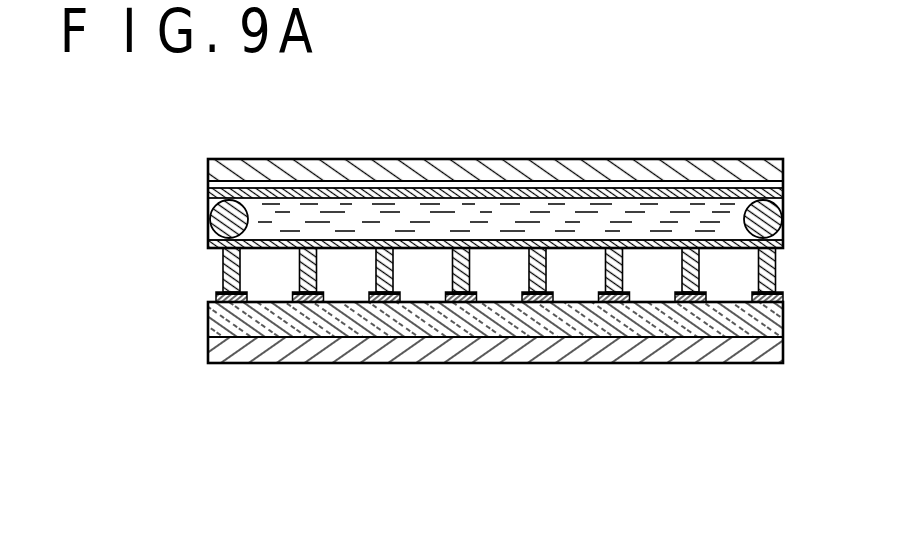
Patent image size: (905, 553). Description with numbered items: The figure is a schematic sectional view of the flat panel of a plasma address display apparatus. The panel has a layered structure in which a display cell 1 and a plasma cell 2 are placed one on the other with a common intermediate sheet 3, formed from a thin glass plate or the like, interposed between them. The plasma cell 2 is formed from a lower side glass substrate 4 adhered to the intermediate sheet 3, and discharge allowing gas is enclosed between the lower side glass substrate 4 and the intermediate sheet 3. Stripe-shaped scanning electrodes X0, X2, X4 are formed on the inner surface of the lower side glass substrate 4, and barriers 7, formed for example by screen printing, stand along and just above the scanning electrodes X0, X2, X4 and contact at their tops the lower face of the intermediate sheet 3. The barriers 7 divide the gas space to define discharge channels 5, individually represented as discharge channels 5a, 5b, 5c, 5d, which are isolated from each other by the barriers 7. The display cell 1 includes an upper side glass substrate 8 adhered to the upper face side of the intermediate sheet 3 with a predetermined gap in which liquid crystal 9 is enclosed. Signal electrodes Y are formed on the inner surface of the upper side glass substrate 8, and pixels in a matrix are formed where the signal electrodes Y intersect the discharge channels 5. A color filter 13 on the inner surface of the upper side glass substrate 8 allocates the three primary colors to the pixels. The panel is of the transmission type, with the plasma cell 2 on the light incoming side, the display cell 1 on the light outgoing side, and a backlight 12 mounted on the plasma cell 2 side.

The display cell 1 is at (521, 178).
The plasma cell 2 is at (521, 330).
The intermediate sheet 3 is at (521, 239).
The lower side glass substrate 4 is at (743, 318).
The discharge channels 5 is at (727, 260).
The discharge channel 5a is at (270, 276).
The discharge channel 5b is at (346, 276).
The discharge channel 5c is at (423, 276).
The discharge channel 5d is at (499, 276).
The barriers 7 is at (547, 263).
The upper side glass substrate 8 is at (731, 170).
The liquid crystal 9 is at (452, 212).
The backlight 12 is at (628, 363).
The color filter 13 is at (282, 190).
The scanning electrode X0 is at (306, 302).
The scanning electrode X2 is at (383, 302).
The scanning electrode X4 is at (460, 302).
The signal electrodes Y is at (618, 194).